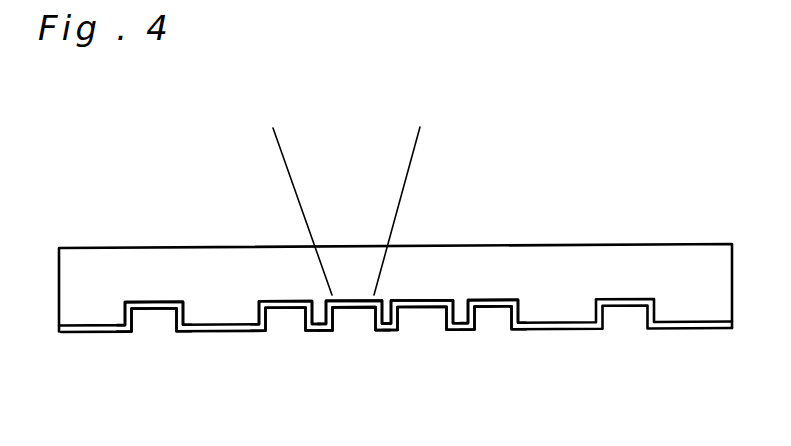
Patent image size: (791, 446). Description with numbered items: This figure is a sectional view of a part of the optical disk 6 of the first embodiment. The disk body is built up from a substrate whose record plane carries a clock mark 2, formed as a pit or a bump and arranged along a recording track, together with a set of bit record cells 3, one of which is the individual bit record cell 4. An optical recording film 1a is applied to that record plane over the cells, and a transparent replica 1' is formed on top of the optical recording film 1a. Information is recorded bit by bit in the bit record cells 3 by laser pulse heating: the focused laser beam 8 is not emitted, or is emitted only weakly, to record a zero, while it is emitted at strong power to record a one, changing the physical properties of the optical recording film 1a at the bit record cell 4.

The transparent replica 1' is at (395, 249).
The optical recording film 1a is at (693, 328).
The clock mark 2 is at (155, 313).
The set of bit record cells 3 is at (520, 360).
The bit record cell 4 is at (357, 312).
The optical disk 6 is at (598, 198).
The laser beam 8 is at (392, 157).